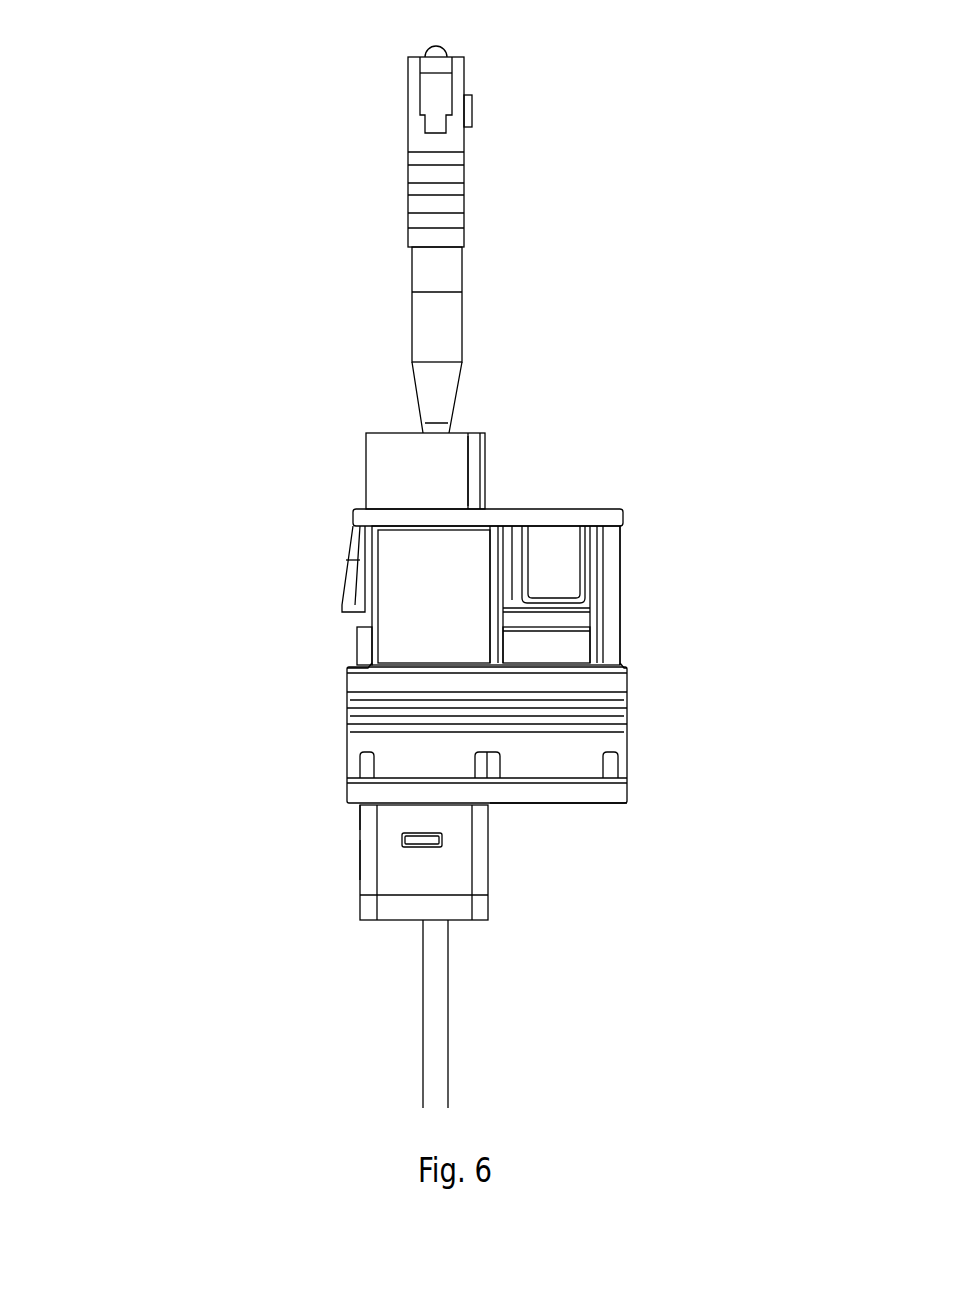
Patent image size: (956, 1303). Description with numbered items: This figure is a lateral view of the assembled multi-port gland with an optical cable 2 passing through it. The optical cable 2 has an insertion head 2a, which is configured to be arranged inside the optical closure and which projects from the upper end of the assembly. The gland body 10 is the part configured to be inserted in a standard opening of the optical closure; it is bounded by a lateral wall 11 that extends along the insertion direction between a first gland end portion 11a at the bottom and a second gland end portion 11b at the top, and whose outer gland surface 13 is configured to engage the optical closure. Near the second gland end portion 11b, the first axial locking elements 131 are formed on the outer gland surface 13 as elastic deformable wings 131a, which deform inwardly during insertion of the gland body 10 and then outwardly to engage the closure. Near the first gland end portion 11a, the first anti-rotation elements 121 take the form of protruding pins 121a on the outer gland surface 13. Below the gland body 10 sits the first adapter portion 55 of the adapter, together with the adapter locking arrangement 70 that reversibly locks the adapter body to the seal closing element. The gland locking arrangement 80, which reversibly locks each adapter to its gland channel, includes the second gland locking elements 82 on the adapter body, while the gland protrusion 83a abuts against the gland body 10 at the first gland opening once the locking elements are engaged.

The optical cable 2 is at (420, 1034).
The insertion head 2a is at (410, 170).
The gland body 10 is at (307, 685).
The lateral wall 11 is at (620, 575).
The first gland end portion 11a is at (605, 803).
The second gland end portion 11b is at (595, 505).
The outer gland surface 13 is at (570, 653).
The first adapter portion 55 is at (356, 859).
The adapter locking arrangement 70 is at (492, 866).
The gland locking arrangement 80 is at (532, 483).
The second gland locking elements 82 is at (487, 478).
The gland protrusion 83a is at (355, 803).
The first anti-rotation elements 121 is at (497, 762).
The protruding pins 121a is at (360, 755).
The first axial locking elements 131 is at (325, 560).
The elastic deformable wings 131a is at (350, 562).